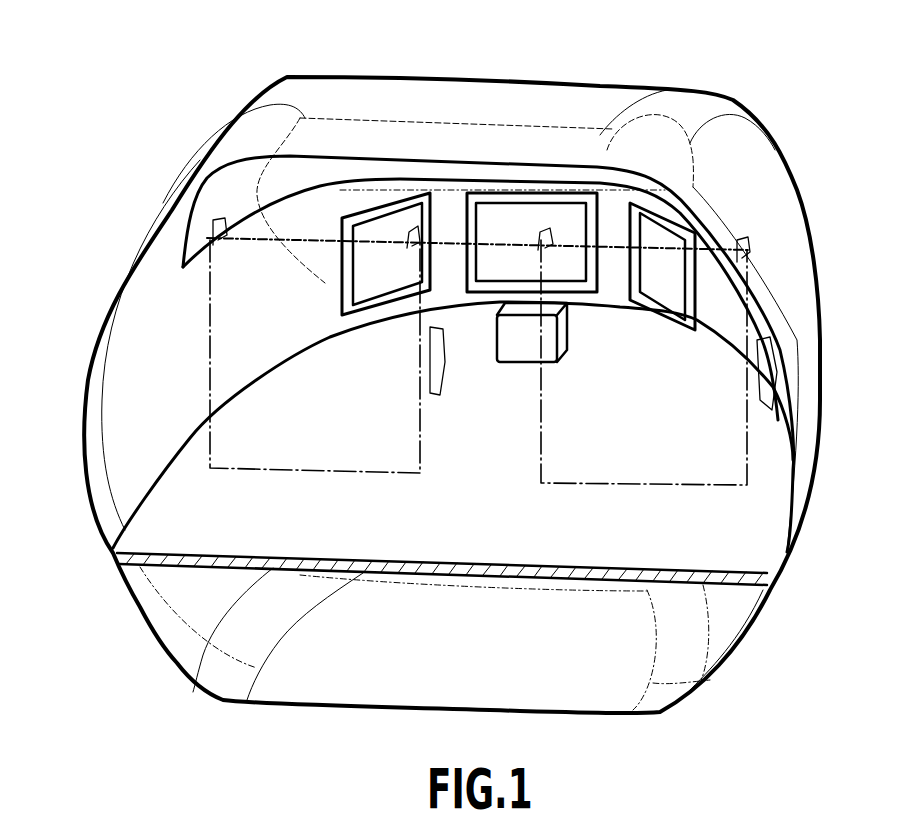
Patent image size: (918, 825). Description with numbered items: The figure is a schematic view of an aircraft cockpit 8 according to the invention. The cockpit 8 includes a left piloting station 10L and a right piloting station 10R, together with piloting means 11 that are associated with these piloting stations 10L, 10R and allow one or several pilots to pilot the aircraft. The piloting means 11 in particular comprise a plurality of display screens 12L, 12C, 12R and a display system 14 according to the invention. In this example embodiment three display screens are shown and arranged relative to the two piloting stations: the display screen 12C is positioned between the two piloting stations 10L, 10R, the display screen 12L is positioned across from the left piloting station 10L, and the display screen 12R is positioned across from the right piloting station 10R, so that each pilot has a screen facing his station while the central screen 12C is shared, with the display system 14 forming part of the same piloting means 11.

The aircraft cockpit 8 is at (246, 70).
The piloting means 11 is at (168, 303).
The left piloting station 10L is at (320, 452).
The right piloting station 10R is at (646, 470).
The display screen 12L is at (398, 223).
The display screen 12C is at (525, 217).
The display screen 12R is at (673, 272).
The display system 14 is at (520, 355).